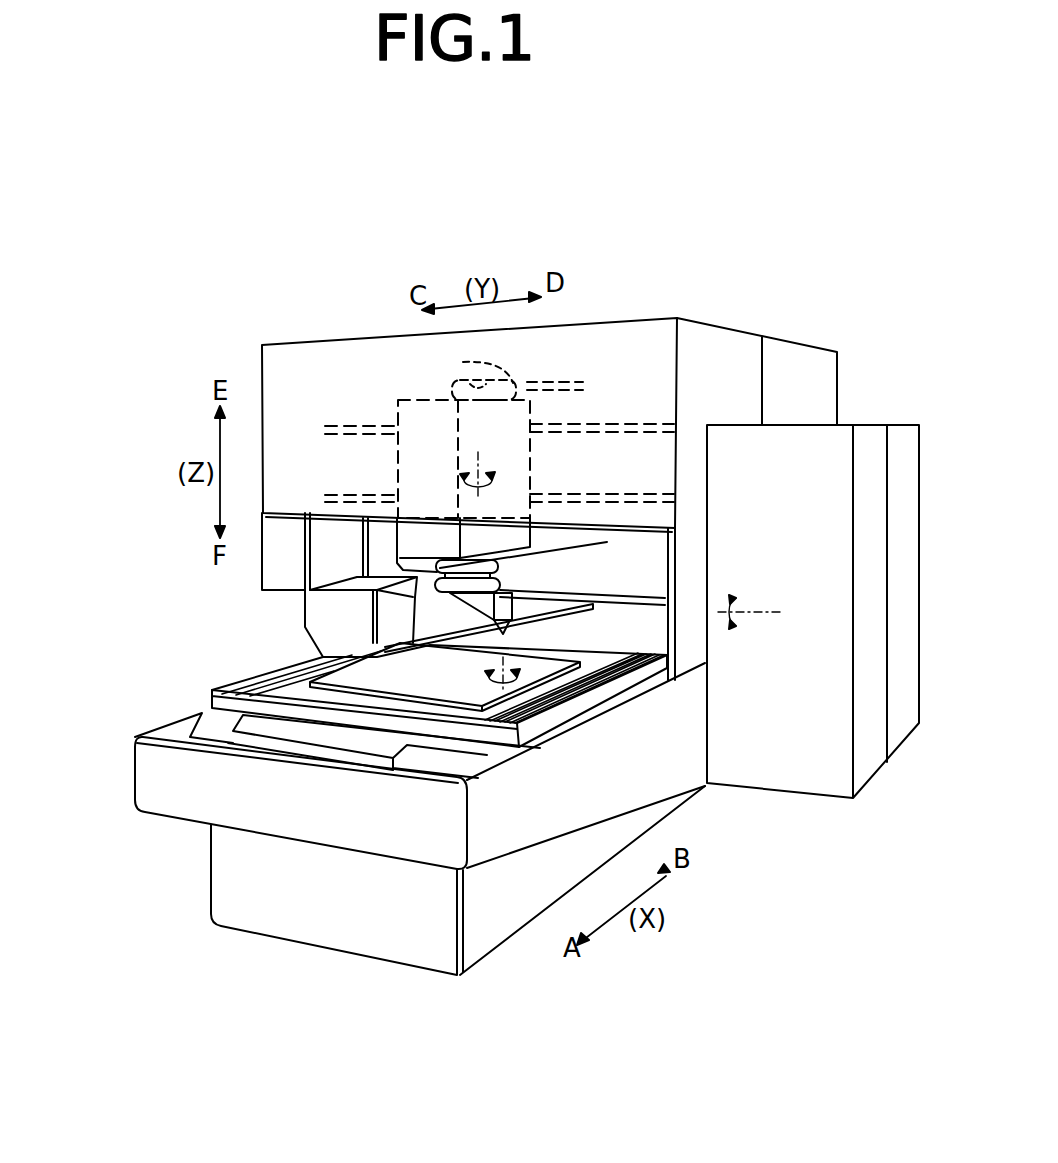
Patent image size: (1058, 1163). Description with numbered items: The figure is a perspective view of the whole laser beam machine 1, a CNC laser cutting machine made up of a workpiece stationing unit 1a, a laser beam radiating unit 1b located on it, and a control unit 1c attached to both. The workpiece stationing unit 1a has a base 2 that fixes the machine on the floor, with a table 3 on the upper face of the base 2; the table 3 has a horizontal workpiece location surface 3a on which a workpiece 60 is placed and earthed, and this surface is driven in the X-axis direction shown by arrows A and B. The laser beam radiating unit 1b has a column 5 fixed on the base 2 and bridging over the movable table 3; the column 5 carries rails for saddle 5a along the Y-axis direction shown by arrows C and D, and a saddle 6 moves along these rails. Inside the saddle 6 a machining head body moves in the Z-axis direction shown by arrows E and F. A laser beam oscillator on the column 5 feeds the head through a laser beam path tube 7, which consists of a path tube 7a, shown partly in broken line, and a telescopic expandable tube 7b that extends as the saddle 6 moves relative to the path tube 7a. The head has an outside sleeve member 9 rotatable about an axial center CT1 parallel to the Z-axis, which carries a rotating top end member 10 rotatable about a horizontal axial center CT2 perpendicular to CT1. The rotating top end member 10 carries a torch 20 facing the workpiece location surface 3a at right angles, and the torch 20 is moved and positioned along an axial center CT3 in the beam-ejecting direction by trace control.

The laser beam machine 1 is at (663, 216).
The workpiece stationing unit 1a is at (144, 699).
The laser beam radiating unit 1b is at (374, 327).
The control unit 1c is at (877, 413).
The base 2 is at (198, 868).
The table 3 is at (212, 690).
The workpiece location surface 3a is at (287, 672).
The column 5 is at (719, 326).
The rails for saddle 5a is at (633, 424).
The saddle 6 is at (398, 468).
The laser beam path tube 7 is at (577, 373).
The path tube 7a is at (548, 380).
The expandable tube 7b is at (463, 362).
The outside sleeve member 9 is at (504, 578).
The rotating top end member 10 is at (513, 606).
The torch 20 is at (490, 620).
The workpiece 60 is at (574, 645).
The axial center CT1 is at (490, 461).
The axial center CT2 is at (753, 597).
The axial center CT3 is at (480, 676).